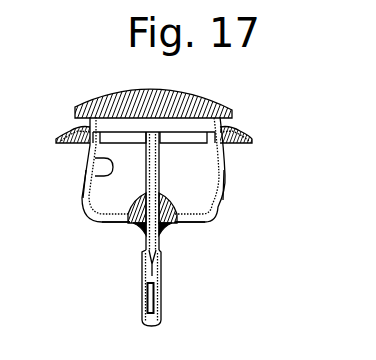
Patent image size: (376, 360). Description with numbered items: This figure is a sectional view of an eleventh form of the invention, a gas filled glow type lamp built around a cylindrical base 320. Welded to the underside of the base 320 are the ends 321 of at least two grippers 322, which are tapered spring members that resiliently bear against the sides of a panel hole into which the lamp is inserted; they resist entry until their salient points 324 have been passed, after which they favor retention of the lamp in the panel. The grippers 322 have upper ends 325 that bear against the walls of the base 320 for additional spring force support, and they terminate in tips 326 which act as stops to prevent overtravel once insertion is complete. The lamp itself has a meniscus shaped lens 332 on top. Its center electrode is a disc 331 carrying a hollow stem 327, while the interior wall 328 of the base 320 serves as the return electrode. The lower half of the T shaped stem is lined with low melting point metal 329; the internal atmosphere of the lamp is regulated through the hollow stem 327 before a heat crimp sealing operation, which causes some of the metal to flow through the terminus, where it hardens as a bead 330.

The cylindrical base 320 is at (226, 170).
The end of gripper 321 is at (102, 222).
The gripper 322 is at (84, 202).
The salient point 324 is at (88, 178).
The upper end of gripper 325 is at (80, 145).
The tip 326 is at (62, 138).
The hollow stem 327 is at (162, 168).
The interior wall 328 is at (93, 158).
The low melting point metal 329 is at (159, 268).
The bead 330 is at (143, 322).
The disc 331 is at (180, 132).
The meniscus shaped lens 332 is at (97, 101).